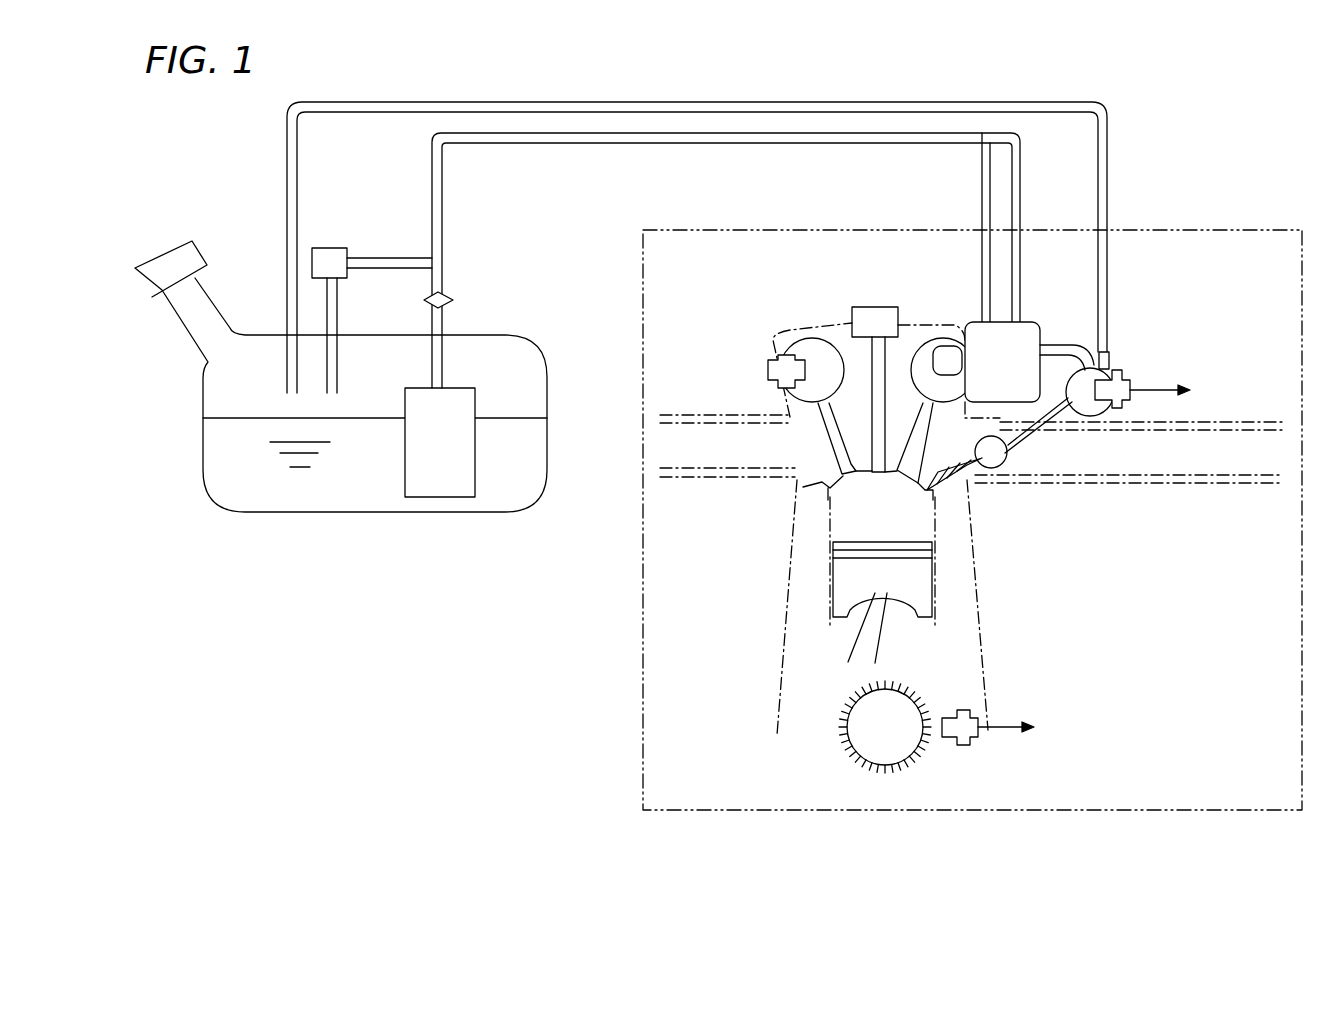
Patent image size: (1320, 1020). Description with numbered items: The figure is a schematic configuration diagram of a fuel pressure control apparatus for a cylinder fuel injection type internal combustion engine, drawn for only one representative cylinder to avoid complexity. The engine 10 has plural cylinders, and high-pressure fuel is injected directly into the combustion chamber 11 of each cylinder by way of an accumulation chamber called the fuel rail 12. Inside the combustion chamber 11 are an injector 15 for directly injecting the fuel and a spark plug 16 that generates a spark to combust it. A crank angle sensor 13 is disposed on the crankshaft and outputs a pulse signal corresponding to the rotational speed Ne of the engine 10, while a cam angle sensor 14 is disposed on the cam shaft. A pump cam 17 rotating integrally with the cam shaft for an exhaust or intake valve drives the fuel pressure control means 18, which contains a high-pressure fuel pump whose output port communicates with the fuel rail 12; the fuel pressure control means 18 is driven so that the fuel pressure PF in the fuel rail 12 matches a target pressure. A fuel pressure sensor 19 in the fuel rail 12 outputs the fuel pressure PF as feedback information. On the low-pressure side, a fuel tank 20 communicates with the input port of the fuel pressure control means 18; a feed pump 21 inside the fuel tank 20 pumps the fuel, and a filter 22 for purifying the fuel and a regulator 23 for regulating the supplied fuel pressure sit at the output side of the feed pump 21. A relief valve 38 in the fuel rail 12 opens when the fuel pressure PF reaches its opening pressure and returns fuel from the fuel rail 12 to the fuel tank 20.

The engine 10 is at (913, 520).
The combustion chamber 11 is at (944, 588).
The fuel rail 12 is at (971, 529).
The crank angle sensor 13 is at (1018, 743).
The cam angle sensor 14 is at (780, 388).
The injector 15 is at (992, 510).
The spark plug 16 is at (831, 521).
The pump cam 17 is at (937, 336).
The fuel pressure control means 18 is at (1029, 334).
The fuel pressure sensor 19 is at (1151, 372).
The fuel tank 20 is at (368, 376).
The feed pump 21 is at (504, 450).
The filter 22 is at (722, 260).
The regulator 23 is at (697, 247).
The relief valve 38 is at (1134, 333).